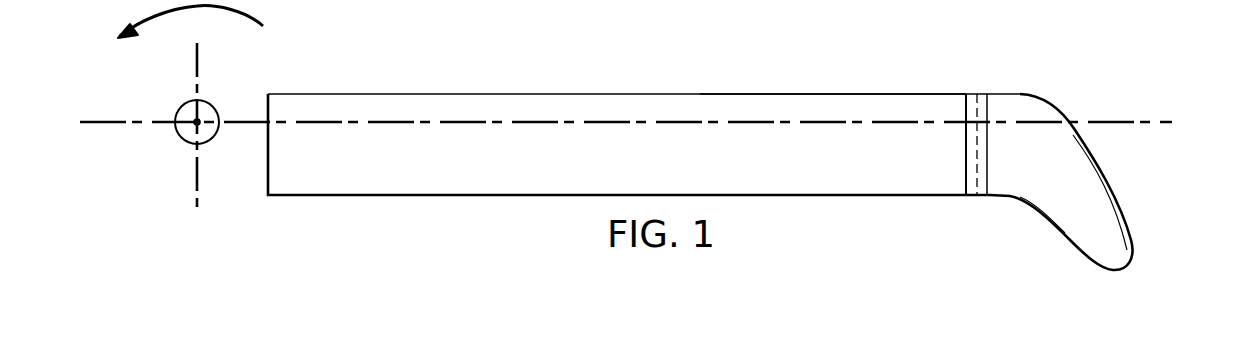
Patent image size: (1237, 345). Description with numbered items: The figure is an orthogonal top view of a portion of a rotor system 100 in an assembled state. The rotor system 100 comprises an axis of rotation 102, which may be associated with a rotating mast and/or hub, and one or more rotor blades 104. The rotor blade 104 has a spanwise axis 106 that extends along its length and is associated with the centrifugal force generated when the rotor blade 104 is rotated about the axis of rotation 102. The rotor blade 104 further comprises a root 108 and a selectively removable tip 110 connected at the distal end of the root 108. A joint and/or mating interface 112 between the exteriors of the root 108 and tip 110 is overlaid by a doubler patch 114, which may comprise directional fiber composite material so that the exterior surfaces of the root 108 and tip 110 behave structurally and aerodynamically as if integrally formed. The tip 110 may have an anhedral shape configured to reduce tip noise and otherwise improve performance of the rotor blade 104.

The rotor system 100 is at (1162, 97).
The axis of rotation 102 is at (193, 120).
The rotor blade 104 is at (690, 95).
The spanwise axis 106 is at (585, 120).
The root 108 is at (872, 103).
The selectively removable tip 110 is at (1030, 107).
The joint and/or mating interface 112 is at (978, 150).
The doubler patch 114 is at (967, 108).